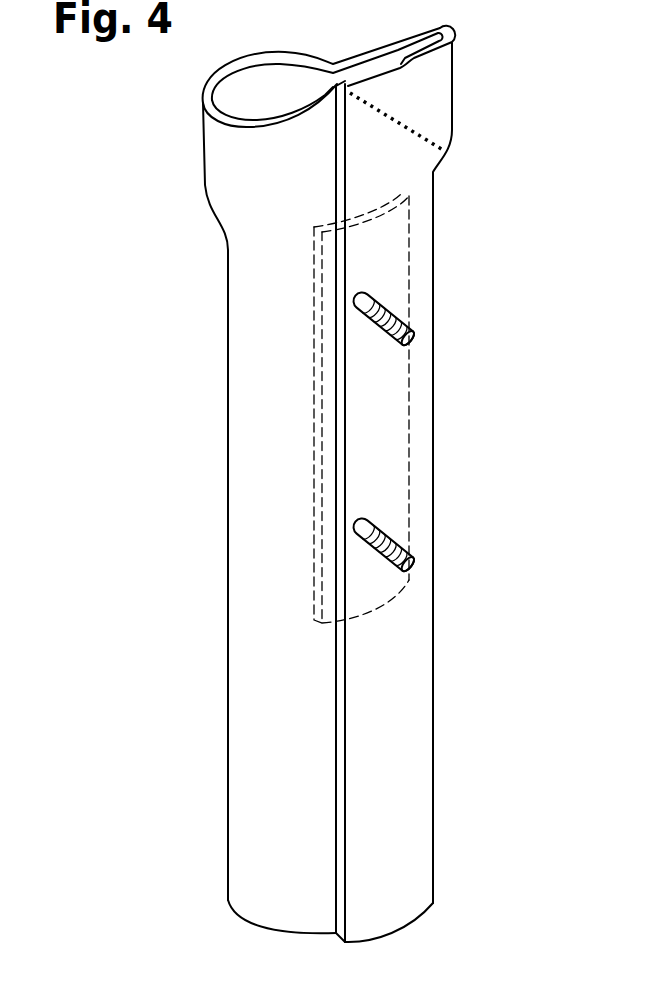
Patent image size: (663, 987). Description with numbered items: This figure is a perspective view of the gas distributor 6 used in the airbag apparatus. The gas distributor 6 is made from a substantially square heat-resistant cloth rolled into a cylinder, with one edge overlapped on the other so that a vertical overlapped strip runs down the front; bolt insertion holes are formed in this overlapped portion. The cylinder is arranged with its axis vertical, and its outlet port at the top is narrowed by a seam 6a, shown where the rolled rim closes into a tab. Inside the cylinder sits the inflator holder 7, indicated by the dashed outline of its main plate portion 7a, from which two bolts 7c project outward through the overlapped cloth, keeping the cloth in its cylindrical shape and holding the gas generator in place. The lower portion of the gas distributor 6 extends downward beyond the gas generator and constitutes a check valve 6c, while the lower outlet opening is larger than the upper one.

The gas distributor 6 is at (317, 484).
The seam 6a is at (403, 124).
The check valve 6c is at (205, 677).
The inflator holder 7 is at (420, 407).
The main plate portion 7a is at (408, 378).
The bolts 7c is at (400, 307).